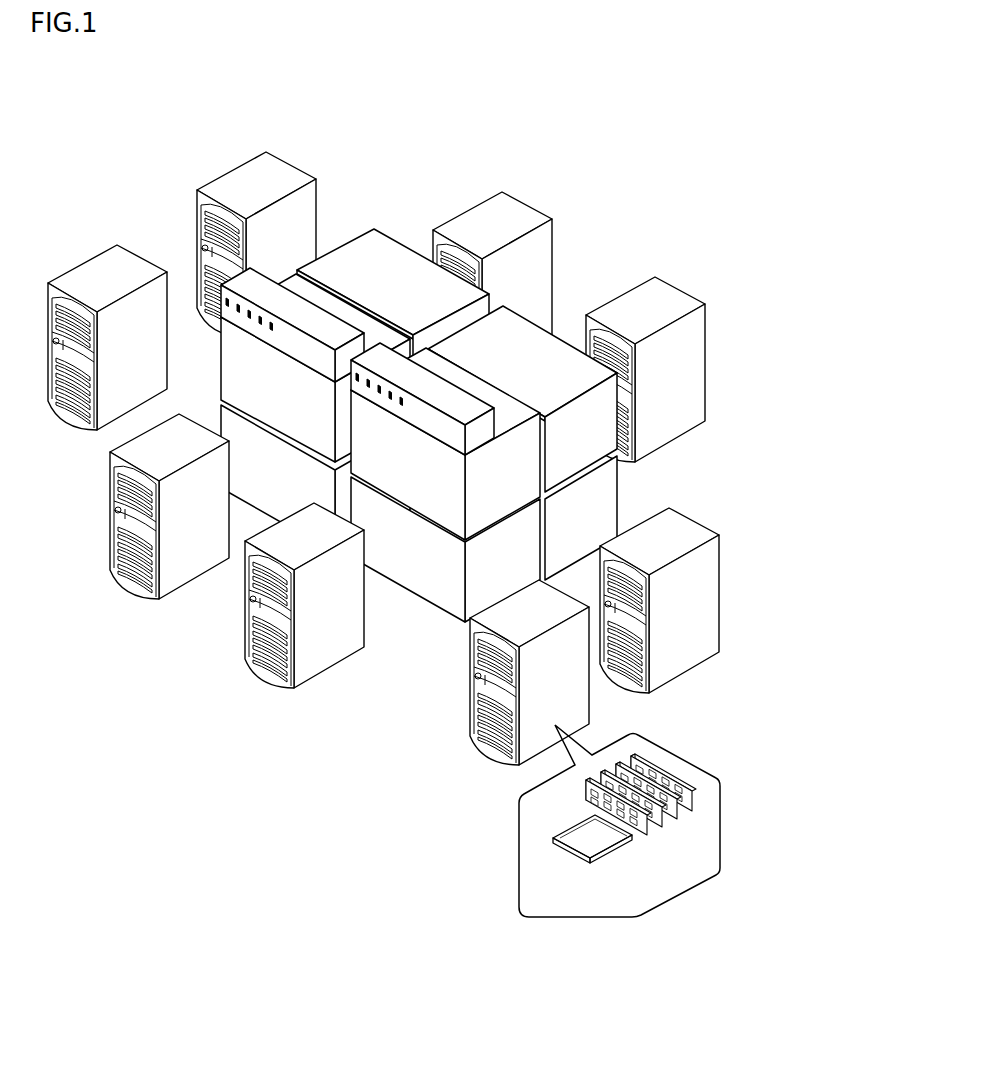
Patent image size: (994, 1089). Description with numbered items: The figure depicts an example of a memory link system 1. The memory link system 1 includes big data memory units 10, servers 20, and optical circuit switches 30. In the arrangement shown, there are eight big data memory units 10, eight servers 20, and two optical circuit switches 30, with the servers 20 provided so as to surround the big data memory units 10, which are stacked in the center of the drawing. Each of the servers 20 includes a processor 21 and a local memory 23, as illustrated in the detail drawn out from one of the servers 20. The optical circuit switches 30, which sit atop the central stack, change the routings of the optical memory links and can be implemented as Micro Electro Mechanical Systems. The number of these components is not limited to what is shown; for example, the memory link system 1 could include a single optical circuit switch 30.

The memory link system 1 is at (587, 119).
The big data memory unit 10 is at (563, 357).
The server 20 is at (455, 694).
The processor 21 is at (577, 857).
The local memory 23 is at (672, 823).
The optical circuit switch 30 is at (383, 357).